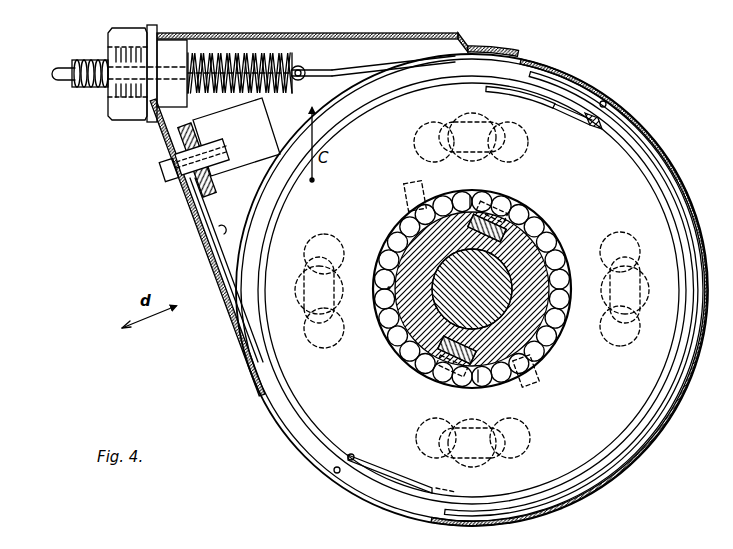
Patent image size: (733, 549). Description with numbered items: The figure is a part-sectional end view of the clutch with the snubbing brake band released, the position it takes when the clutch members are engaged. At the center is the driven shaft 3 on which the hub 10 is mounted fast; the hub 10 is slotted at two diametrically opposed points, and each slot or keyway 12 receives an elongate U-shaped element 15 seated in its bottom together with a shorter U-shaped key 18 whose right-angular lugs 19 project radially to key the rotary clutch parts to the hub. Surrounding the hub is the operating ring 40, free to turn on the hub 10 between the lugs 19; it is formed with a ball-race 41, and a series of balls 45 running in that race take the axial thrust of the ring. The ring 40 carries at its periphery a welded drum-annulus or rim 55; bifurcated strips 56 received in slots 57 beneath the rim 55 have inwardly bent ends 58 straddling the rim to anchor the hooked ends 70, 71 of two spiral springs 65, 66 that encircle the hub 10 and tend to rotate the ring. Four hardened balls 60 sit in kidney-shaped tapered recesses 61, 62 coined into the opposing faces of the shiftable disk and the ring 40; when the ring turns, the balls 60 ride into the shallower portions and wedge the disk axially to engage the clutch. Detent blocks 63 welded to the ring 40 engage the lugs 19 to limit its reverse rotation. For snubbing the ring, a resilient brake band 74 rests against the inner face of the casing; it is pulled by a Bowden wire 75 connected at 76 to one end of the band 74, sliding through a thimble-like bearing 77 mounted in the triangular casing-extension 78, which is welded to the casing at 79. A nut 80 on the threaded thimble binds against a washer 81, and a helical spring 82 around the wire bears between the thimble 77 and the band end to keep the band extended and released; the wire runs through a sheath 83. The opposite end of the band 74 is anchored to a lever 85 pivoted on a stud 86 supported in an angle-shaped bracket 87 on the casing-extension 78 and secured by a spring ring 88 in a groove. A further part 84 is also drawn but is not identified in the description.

The driven shaft 3 is at (556, 291).
The hub 10 is at (546, 275).
The keyway 12 is at (549, 238).
The U-shaped element 15 is at (506, 206).
The U-shaped key 18 is at (493, 214).
The lugs 19 is at (470, 196).
The operating ring 40 is at (472, 290).
The ball-race 41 is at (380, 300).
The balls 45 is at (384, 288).
The drum-annulus 55 is at (362, 102).
The bifurcated strips 56 is at (560, 88).
The slots 57 is at (526, 63).
The inwardly bent ends 58 is at (606, 104).
The hardened balls 60 is at (473, 114).
The recesses 61 is at (526, 146).
The recesses 62 is at (416, 146).
The detent blocks 63 is at (404, 190).
The spiral spring 65 is at (566, 112).
The spiral spring 66 is at (396, 473).
The hooked end 70 is at (596, 128).
The hooked end 71 is at (350, 454).
The brake band 74 is at (410, 63).
The Bowden wire 75 is at (68, 81).
The connection 76 is at (334, 69).
The thimble-like bearing 77 is at (172, 73).
The casing-extension 78 is at (400, 33).
The weld 79 is at (496, 47).
The nut 80 is at (155, 30).
The washer 81 is at (122, 38).
The helical spring 82 is at (298, 65).
The sheath 83 is at (92, 61).
The spring 84 is at (240, 73).
The lever 85 is at (190, 151).
The stud 86 is at (162, 171).
The angle-shaped bracket 87 is at (210, 131).
The spring ring 88 is at (190, 183).